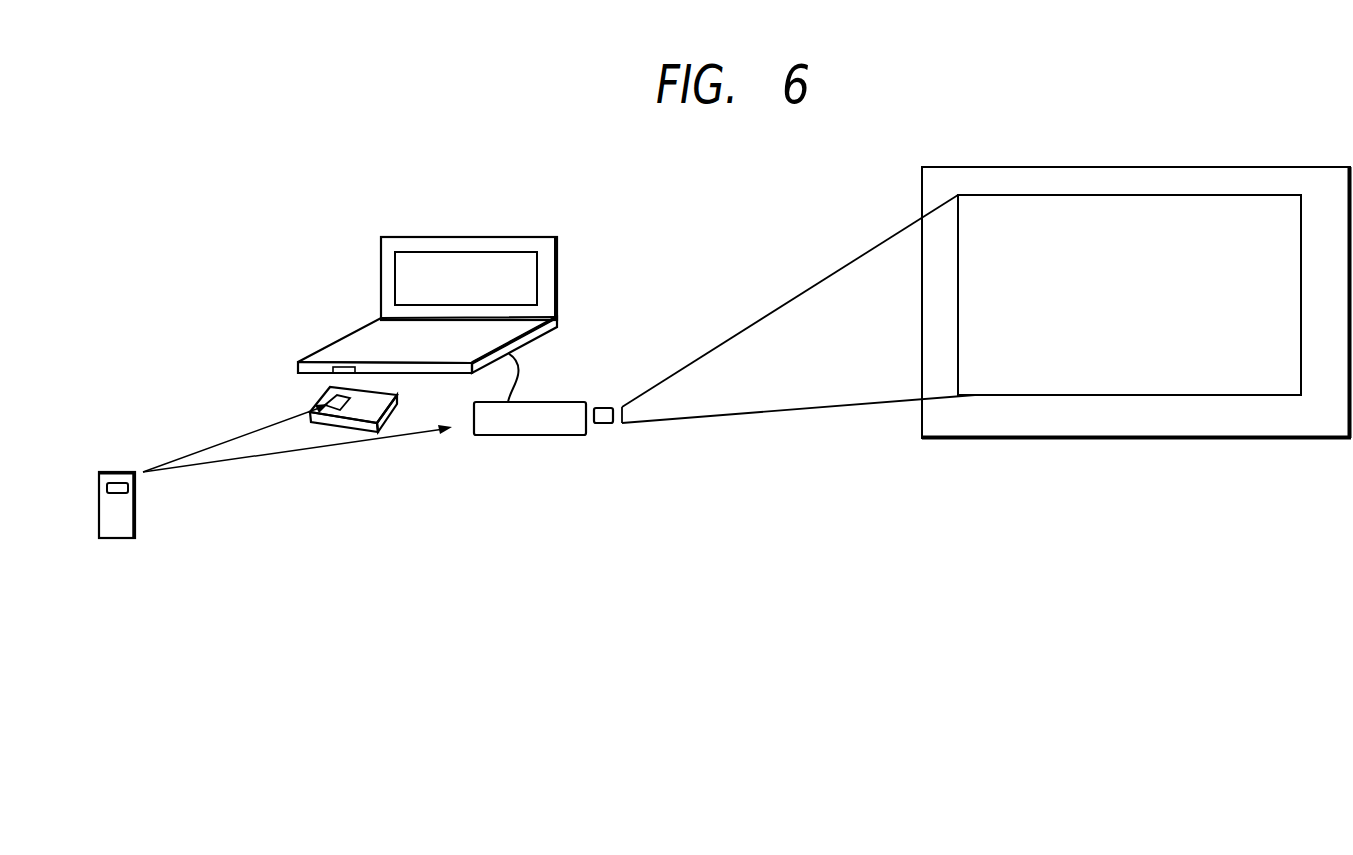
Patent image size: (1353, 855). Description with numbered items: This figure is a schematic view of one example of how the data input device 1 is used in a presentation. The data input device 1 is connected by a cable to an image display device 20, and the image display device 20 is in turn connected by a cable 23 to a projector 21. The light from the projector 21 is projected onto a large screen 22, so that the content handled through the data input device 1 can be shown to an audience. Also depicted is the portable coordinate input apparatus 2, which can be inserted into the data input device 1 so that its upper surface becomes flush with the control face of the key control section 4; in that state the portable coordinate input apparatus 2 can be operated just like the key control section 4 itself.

The data input device 1 is at (365, 412).
The portable coordinate input apparatus 2 is at (122, 530).
The key control section 4 is at (440, 374).
The image display device 20 is at (558, 250).
The projector 21 is at (557, 437).
The large screen 22 is at (1157, 167).
The cable 23 is at (518, 364).